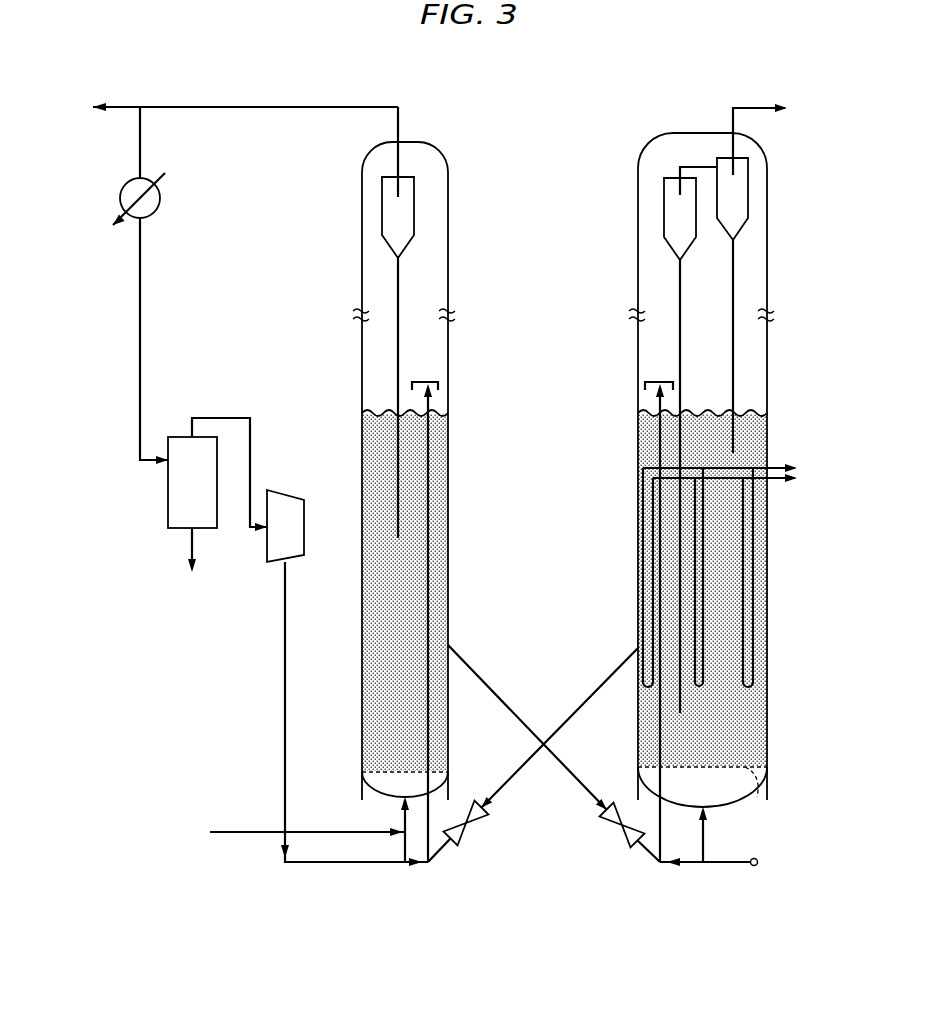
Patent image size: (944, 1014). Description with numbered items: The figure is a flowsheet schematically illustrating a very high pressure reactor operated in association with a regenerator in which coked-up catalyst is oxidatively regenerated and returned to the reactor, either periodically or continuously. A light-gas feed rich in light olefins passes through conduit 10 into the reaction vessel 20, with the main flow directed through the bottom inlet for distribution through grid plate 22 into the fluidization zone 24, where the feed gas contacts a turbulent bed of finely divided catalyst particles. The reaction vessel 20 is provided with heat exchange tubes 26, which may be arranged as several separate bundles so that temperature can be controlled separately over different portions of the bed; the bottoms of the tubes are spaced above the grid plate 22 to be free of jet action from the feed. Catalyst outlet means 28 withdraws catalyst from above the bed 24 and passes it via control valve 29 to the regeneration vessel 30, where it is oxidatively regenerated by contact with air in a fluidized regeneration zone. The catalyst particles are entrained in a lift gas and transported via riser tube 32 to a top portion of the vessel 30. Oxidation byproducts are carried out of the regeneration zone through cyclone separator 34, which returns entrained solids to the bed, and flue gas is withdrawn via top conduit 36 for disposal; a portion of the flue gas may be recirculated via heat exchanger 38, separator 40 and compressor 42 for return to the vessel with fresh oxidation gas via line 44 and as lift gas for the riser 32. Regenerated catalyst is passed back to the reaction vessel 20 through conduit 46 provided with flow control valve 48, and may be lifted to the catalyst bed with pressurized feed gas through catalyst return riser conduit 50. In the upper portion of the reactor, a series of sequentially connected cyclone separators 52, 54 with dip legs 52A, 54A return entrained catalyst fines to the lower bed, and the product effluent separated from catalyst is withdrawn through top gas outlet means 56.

The conduit 10 is at (725, 862).
The reaction vessel 20 is at (767, 720).
The grid plate 22 is at (757, 796).
The fluidization zone 24 is at (702, 588).
The heat exchange tubes 26 is at (753, 525).
The catalyst outlet means 28 is at (605, 680).
The control valve 29 is at (462, 828).
The regeneration vessel 30 is at (448, 560).
The riser tube 32 is at (428, 598).
The cyclone separator 34 is at (414, 210).
The top conduit 36 is at (268, 107).
The heat exchanger 38 is at (160, 198).
The separator 40 is at (168, 486).
The compressor 42 is at (303, 500).
The line 44 is at (402, 814).
The conduit 46 is at (466, 663).
The flow control valve 48 is at (626, 830).
The catalyst return riser conduit 50 is at (660, 443).
The cyclone separator 52 is at (664, 212).
The dip leg 52A is at (678, 274).
The cyclone separator 54 is at (748, 197).
The dip leg 54A is at (733, 268).
The top gas outlet means 56 is at (733, 119).